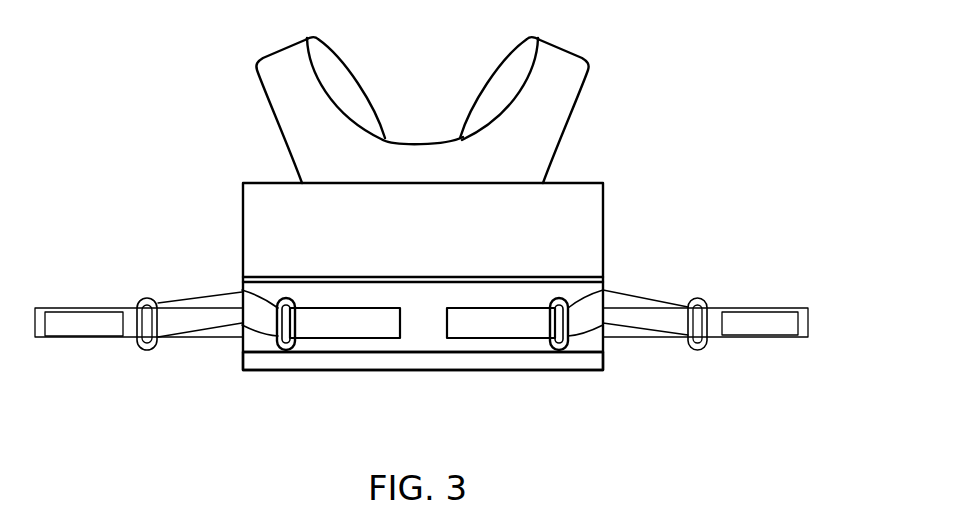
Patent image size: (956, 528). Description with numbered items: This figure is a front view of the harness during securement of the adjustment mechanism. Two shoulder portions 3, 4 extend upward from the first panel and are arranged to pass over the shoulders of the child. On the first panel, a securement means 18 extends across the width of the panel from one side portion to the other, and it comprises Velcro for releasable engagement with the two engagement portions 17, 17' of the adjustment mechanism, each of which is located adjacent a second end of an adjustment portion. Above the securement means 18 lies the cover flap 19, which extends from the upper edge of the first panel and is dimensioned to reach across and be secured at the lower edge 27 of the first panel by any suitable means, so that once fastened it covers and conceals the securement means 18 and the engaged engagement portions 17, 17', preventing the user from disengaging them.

The shoulder portion 3 is at (568, 87).
The shoulder portion 4 is at (288, 102).
The cover flap 19 is at (270, 222).
The securement means 18 is at (422, 297).
The engagement portion 17' is at (345, 364).
The engagement portion 17 is at (501, 367).
The lower edge 27 is at (533, 372).